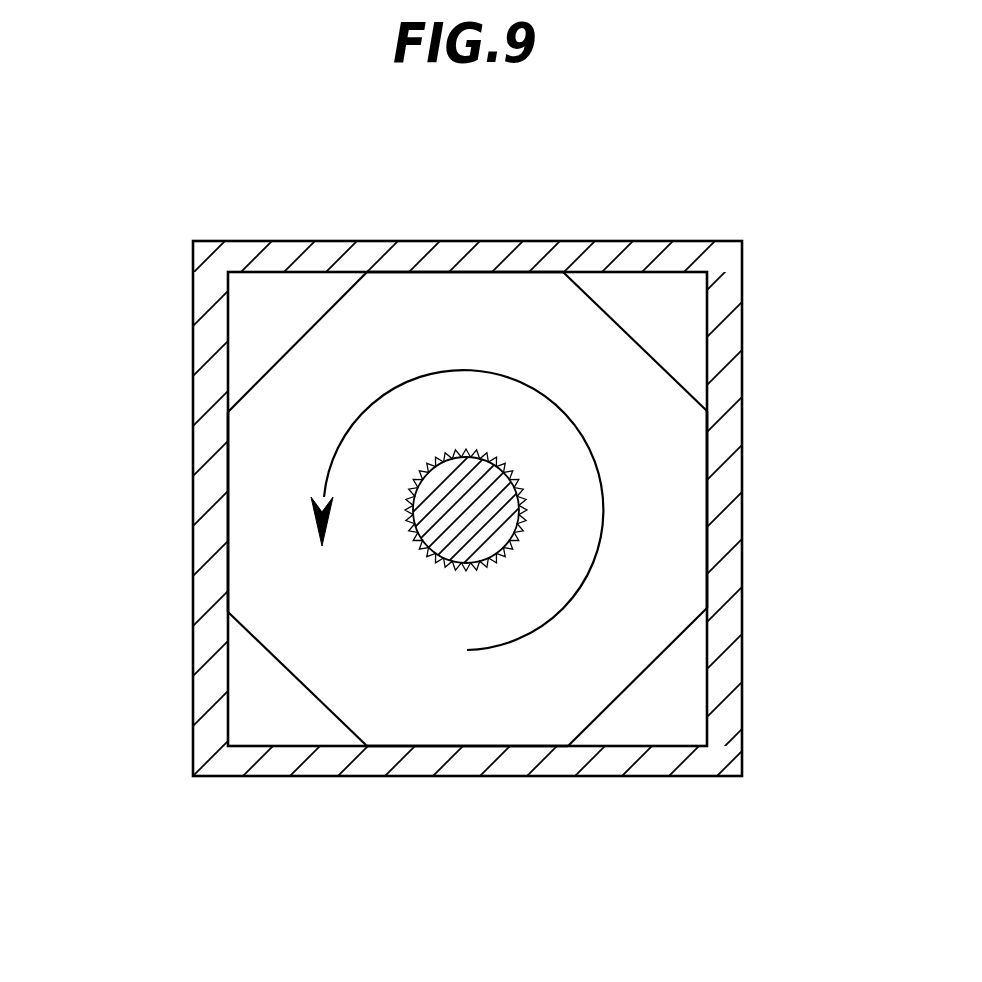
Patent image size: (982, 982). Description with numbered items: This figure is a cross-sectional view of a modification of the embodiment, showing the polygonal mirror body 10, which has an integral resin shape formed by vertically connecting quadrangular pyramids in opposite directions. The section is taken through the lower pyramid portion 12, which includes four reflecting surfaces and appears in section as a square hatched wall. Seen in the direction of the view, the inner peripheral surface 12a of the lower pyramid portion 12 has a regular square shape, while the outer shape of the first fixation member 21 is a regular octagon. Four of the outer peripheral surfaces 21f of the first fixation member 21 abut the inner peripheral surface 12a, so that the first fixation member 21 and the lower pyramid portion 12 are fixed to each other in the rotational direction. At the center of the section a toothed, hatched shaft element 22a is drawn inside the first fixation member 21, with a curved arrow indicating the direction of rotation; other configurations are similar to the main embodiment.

The polygonal mirror body 10 is at (741, 240).
The lower pyramid portion 12 is at (727, 338).
The inner peripheral surface 12a is at (624, 272).
The first fixation member 21 is at (613, 613).
The outer peripheral surfaces 21f is at (468, 240).
The gear of shaft 22a is at (433, 522).